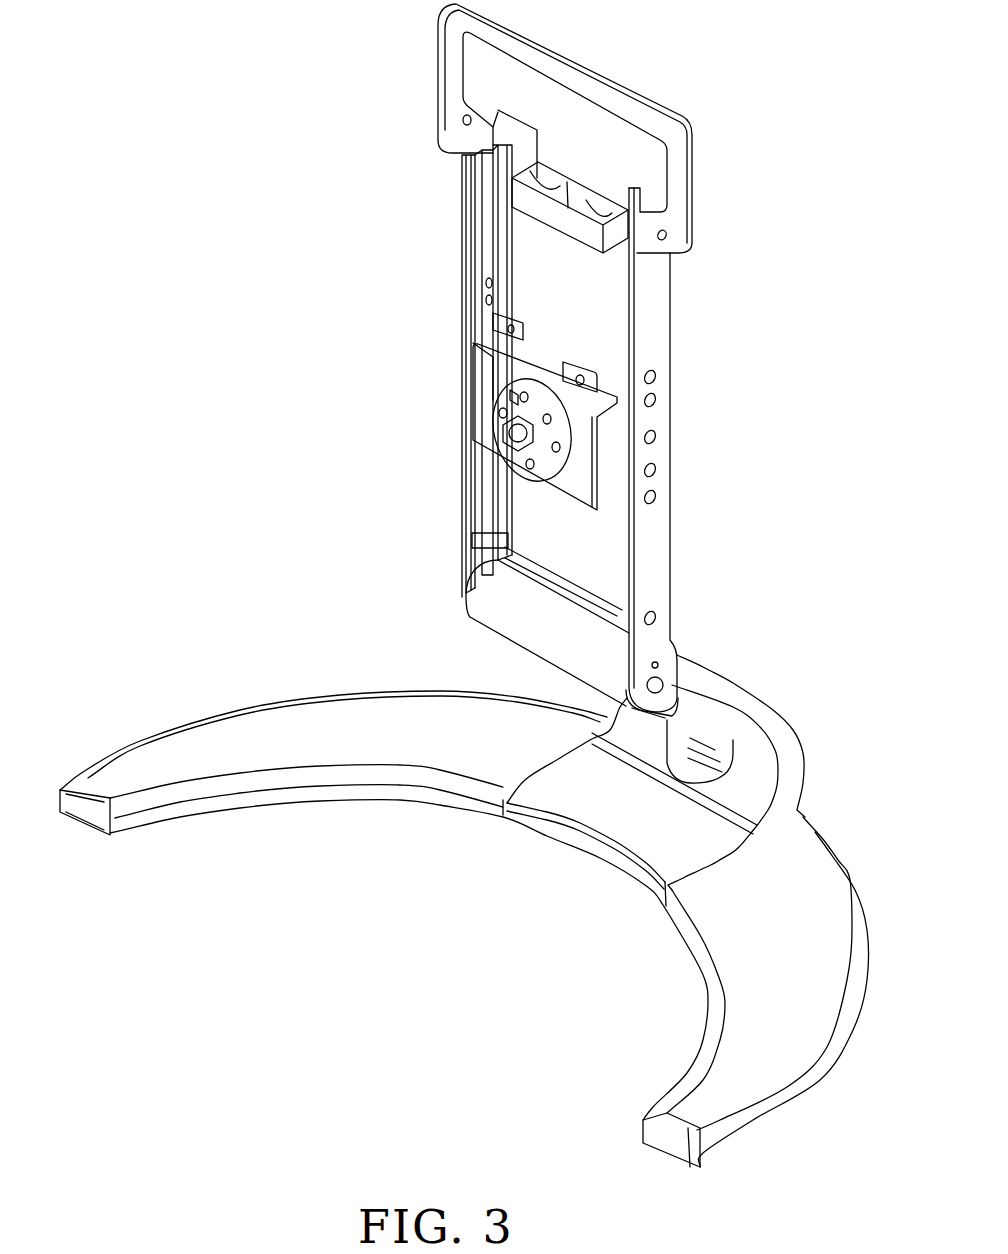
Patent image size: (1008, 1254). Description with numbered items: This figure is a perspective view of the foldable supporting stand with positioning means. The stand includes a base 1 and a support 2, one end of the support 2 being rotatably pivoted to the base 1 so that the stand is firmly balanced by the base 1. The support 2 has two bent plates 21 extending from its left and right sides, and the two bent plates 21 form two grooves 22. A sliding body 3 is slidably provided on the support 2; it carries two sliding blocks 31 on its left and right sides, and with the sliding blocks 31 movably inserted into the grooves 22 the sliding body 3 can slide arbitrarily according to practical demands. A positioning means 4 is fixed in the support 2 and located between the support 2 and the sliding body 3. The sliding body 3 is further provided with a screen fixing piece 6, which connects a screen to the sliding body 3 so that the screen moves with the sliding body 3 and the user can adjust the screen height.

The base 1 is at (805, 730).
The support 2 is at (672, 318).
The bent plates 21 is at (478, 245).
The grooves 22 is at (492, 180).
The sliding body 3 is at (503, 368).
The sliding blocks 31 is at (497, 318).
The positioning means 4 is at (588, 362).
The screen fixing piece 6 is at (482, 397).